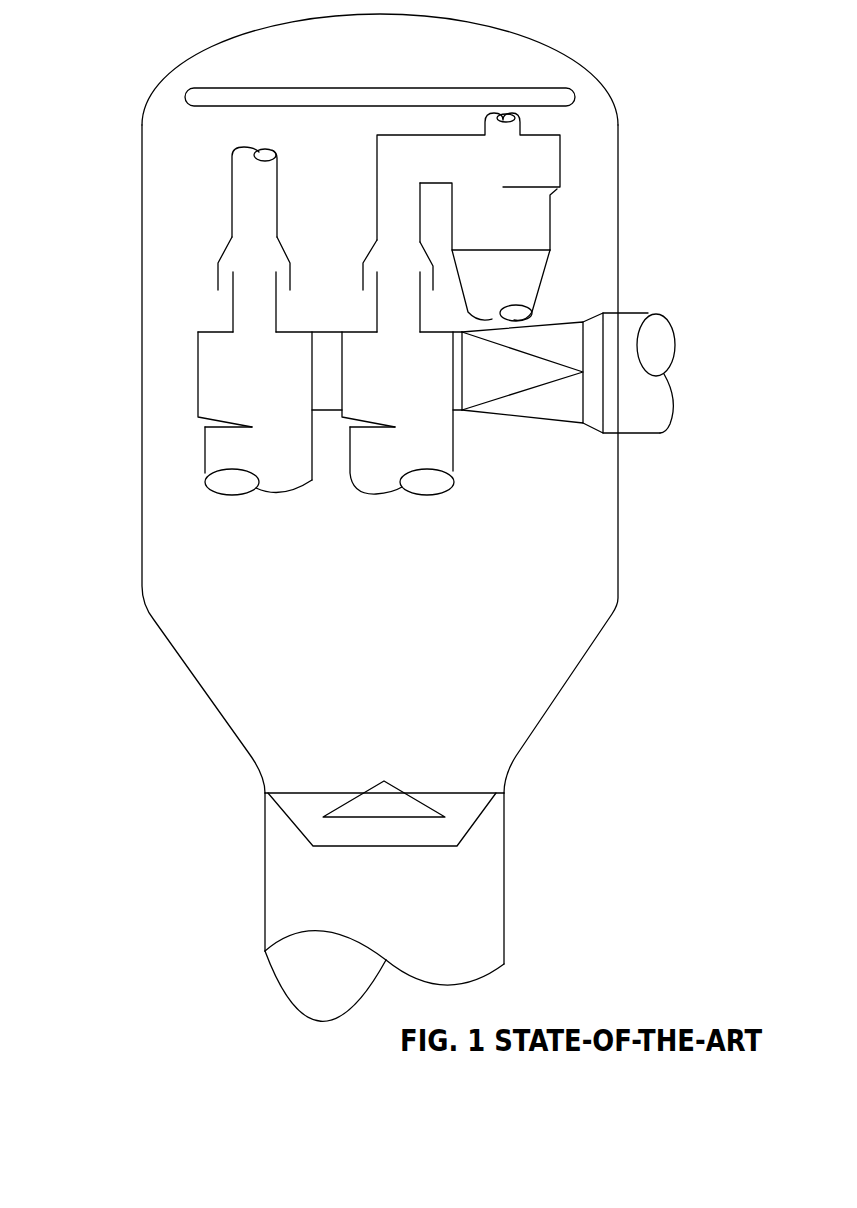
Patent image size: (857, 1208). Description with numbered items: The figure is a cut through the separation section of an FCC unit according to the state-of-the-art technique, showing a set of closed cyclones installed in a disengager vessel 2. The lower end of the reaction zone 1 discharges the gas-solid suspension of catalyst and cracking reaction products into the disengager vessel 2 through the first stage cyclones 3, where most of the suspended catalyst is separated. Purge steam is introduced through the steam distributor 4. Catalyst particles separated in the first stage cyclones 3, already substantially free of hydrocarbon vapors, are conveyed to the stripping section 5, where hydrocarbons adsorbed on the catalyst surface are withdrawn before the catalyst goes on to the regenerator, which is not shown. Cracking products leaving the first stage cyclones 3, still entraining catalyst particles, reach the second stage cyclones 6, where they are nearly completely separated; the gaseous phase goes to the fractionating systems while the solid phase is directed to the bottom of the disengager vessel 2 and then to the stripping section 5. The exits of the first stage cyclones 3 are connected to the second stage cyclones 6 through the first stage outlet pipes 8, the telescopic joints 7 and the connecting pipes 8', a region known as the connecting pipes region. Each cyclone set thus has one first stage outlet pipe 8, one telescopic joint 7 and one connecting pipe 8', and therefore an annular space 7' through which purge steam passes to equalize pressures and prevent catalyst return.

The reaction zone 1 is at (672, 327).
The disengager vessel 2 is at (622, 530).
The first stage cyclones 3 is at (377, 495).
The steam distributor 4 is at (203, 88).
The stripping section 5 is at (510, 880).
The second stage cyclones 6 is at (550, 210).
The telescopic joint 7 is at (169, 303).
The annular space 7' is at (221, 321).
The first stage outlet pipe 8 is at (163, 340).
The connecting pipe 8' is at (158, 217).